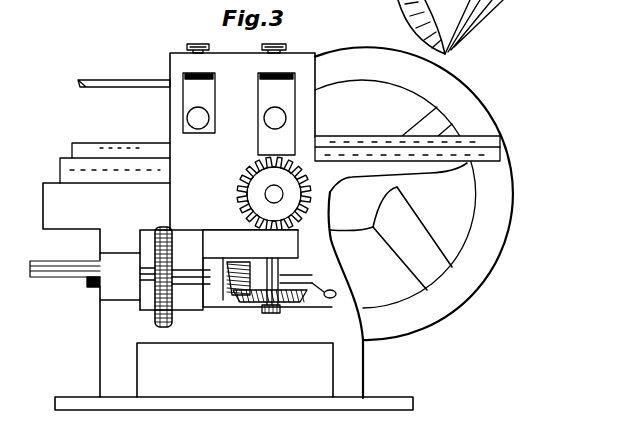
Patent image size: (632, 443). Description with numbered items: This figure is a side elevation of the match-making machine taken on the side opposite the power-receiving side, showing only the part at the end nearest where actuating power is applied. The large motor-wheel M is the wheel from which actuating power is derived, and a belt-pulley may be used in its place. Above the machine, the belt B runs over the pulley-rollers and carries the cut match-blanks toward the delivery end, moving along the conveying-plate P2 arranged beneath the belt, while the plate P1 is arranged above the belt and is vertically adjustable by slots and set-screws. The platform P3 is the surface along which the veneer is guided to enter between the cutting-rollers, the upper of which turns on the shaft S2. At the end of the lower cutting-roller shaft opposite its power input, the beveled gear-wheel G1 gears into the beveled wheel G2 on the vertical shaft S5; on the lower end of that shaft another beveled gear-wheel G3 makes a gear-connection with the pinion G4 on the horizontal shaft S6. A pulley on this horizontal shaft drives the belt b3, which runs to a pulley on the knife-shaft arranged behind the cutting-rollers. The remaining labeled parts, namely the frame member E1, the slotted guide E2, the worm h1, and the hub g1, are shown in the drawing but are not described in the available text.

The motor-wheel M is at (503, 192).
The belt B is at (124, 73).
The frame standard E1 is at (91, 290).
The slotted guide E2 is at (215, 108).
The shaft of the upper cutting-roller S2 is at (263, 121).
The plate P1 is at (118, 143).
The conveying-plate P2 is at (115, 170).
The platform P3 is at (407, 139).
The vertical shaft S5 is at (283, 280).
The horizontal shaft S6 is at (120, 276).
The worm h1 is at (176, 245).
The beveled gear-wheel G1 is at (236, 193).
The gear hub g1 is at (274, 187).
The beveled wheel G2 is at (250, 244).
The beveled gear-wheel G3 is at (327, 288).
The pinion G4 is at (244, 308).
The belt b3 is at (158, 345).